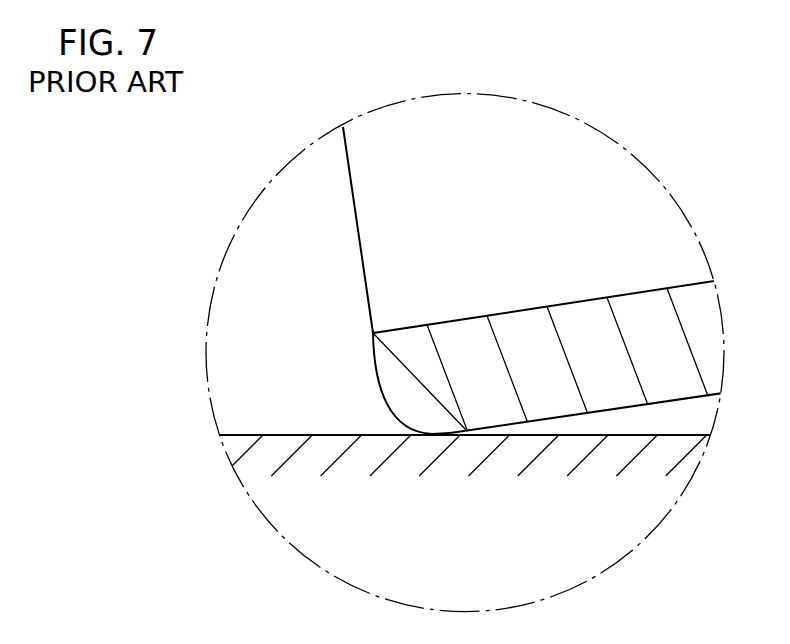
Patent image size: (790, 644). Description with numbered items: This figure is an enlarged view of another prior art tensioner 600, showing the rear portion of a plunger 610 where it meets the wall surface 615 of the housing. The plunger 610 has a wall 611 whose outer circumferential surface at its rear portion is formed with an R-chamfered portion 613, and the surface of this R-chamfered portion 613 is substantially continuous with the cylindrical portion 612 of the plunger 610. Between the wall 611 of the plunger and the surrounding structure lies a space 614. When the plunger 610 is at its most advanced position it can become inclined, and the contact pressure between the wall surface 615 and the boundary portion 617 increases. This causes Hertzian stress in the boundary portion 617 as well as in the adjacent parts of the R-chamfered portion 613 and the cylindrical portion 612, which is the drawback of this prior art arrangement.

The prior art light guide assembly 600 is at (250, 263).
The plunger 610 is at (490, 322).
The wall 611 is at (422, 397).
The cylindrical portion 612 is at (630, 408).
The R-chamfered portion 613 is at (400, 420).
The gap space 614 is at (261, 359).
The wall surface 615 is at (298, 435).
The boundary portion 617 is at (443, 434).